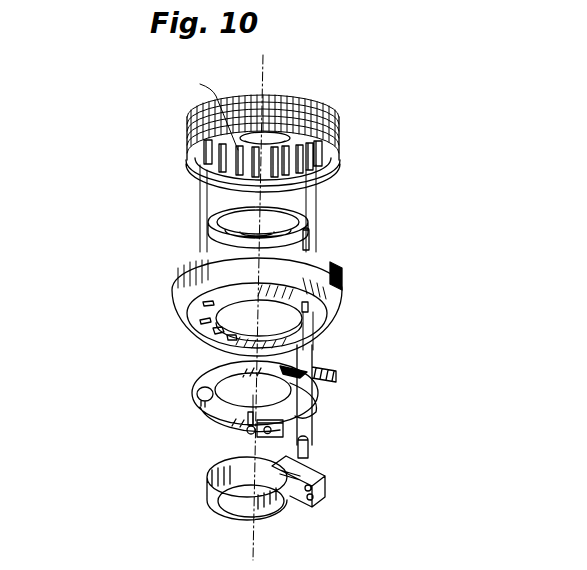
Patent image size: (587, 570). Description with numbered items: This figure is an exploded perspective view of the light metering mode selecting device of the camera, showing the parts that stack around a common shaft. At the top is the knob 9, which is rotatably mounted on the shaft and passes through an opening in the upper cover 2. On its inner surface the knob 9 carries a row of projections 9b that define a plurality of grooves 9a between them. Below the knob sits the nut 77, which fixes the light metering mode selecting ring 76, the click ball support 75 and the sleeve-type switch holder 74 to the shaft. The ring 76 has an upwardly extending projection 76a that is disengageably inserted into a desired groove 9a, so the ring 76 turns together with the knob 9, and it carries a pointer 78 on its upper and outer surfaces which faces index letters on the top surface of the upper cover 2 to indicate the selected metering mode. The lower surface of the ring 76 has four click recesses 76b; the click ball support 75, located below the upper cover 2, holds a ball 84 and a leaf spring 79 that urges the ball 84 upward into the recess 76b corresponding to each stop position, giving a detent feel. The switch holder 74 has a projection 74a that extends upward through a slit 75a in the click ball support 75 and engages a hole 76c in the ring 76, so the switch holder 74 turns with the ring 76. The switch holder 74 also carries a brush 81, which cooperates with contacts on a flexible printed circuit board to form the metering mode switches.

The knob 9 is at (337, 128).
The grooves 9a is at (292, 180).
The projections 9b is at (200, 84).
The nut 77 is at (207, 221).
The light metering mode selecting ring 76 is at (178, 282).
The projection 76a is at (318, 248).
The click recesses 76b is at (214, 322).
The hole 76c is at (322, 300).
The pointer 78 is at (343, 272).
The click ball support 75 is at (190, 385).
The slit 75a is at (300, 372).
The upper cover 2 is at (336, 374).
The ball 84 is at (197, 398).
The leaf spring 79 is at (250, 434).
The switch holder 74 is at (210, 490).
The projection 74a is at (310, 440).
The brush 81 is at (325, 482).